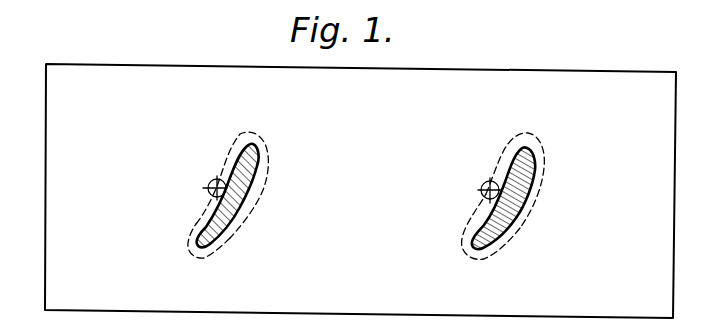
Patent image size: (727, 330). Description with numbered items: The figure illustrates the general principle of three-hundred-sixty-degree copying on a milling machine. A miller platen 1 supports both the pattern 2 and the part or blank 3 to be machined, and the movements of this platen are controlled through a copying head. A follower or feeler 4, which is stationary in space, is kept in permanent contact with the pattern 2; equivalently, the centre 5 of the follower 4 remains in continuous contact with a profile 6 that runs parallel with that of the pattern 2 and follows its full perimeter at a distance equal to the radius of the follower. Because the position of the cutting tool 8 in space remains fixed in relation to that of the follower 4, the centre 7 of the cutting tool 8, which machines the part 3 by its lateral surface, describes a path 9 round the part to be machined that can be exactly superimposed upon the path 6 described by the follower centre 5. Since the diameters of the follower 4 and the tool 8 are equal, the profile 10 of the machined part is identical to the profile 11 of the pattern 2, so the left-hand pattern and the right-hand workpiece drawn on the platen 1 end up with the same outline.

The miller platen 1 is at (90, 86).
The pattern 2 is at (254, 147).
The part or blank to be machined 3 is at (528, 148).
The follower or feeler 4 is at (215, 178).
The centre of the follower 5 is at (207, 192).
The profile parallel with that of the pattern 6 is at (190, 228).
The centre of the cutting tool 7 is at (478, 190).
The cutting tool 8 is at (490, 180).
The path of the cutting tool centre 9 is at (528, 208).
The profile of the machined part 10 is at (478, 238).
The profile of the pattern 11 is at (190, 238).